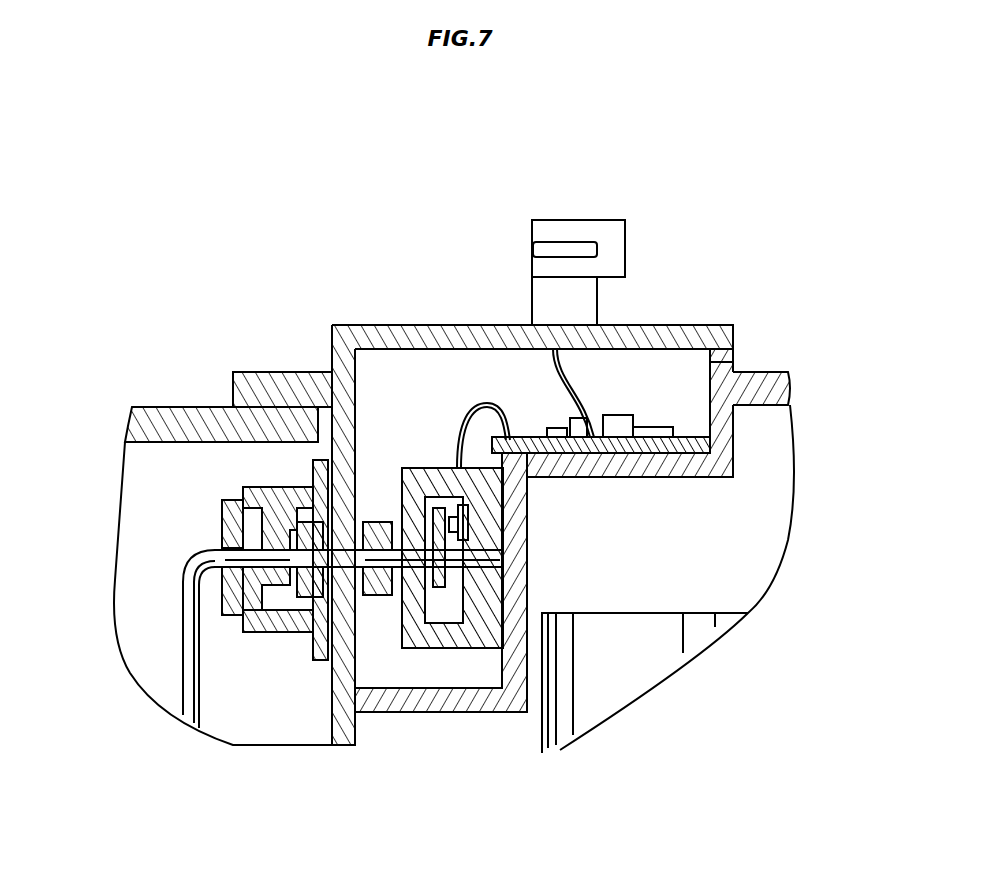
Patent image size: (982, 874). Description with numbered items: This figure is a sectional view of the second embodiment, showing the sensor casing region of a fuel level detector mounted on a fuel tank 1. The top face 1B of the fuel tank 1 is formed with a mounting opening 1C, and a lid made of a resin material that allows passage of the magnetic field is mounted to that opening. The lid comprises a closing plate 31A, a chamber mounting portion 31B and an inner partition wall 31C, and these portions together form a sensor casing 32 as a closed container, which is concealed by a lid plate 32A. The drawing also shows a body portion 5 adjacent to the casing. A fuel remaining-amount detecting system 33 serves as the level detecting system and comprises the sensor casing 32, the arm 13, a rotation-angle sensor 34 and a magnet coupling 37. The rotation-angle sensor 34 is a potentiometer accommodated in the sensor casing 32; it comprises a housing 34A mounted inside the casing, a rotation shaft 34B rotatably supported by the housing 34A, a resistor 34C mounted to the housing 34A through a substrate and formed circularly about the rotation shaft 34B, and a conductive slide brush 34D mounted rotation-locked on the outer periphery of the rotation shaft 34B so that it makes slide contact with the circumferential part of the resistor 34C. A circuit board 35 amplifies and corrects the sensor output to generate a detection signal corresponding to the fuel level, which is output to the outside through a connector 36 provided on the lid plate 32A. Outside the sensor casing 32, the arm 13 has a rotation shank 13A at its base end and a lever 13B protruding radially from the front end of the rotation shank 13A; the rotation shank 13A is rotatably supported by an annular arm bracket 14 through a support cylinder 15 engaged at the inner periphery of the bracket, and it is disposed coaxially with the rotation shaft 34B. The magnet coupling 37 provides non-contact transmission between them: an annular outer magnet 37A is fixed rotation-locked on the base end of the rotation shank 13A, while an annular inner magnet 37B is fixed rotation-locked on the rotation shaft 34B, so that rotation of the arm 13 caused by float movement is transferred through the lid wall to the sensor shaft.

The fuel tank 1 is at (148, 423).
The top face 1B is at (213, 428).
The mounting opening 1C is at (313, 530).
The motor block 5 is at (603, 700).
The arm 13 is at (190, 610).
The rotation shank 13A is at (210, 557).
The lever 13B is at (182, 687).
The arm bracket 14 is at (263, 622).
The support cylinder 15 is at (220, 523).
The closing plate 31A is at (257, 390).
The chamber mounting portion 31B is at (343, 733).
The inner partition wall 31C is at (513, 647).
The sensor casing 32 is at (672, 479).
The lid plate 32A is at (697, 328).
The fuel remaining-amount detecting system 33 is at (362, 318).
The rotation-angle sensor 34 is at (421, 440).
The housing 34A is at (487, 635).
The rotation shaft 34B is at (450, 557).
The resistor 34C is at (468, 520).
The slide brush 34D is at (470, 506).
The circuit board 35 is at (523, 447).
The connector 36 is at (607, 235).
The magnet coupling 37 is at (303, 597).
The outer magnet 37A is at (318, 428).
The inner magnet 37B is at (377, 583).